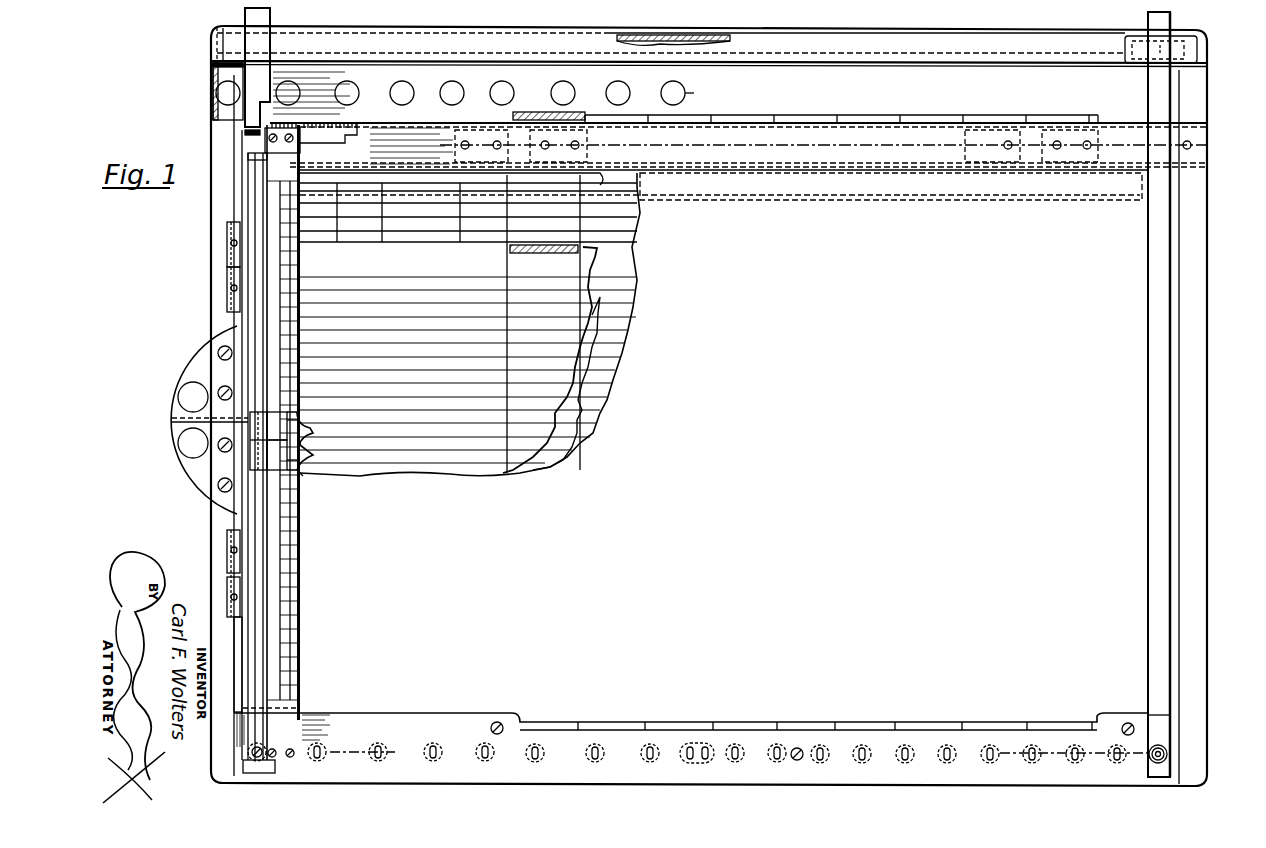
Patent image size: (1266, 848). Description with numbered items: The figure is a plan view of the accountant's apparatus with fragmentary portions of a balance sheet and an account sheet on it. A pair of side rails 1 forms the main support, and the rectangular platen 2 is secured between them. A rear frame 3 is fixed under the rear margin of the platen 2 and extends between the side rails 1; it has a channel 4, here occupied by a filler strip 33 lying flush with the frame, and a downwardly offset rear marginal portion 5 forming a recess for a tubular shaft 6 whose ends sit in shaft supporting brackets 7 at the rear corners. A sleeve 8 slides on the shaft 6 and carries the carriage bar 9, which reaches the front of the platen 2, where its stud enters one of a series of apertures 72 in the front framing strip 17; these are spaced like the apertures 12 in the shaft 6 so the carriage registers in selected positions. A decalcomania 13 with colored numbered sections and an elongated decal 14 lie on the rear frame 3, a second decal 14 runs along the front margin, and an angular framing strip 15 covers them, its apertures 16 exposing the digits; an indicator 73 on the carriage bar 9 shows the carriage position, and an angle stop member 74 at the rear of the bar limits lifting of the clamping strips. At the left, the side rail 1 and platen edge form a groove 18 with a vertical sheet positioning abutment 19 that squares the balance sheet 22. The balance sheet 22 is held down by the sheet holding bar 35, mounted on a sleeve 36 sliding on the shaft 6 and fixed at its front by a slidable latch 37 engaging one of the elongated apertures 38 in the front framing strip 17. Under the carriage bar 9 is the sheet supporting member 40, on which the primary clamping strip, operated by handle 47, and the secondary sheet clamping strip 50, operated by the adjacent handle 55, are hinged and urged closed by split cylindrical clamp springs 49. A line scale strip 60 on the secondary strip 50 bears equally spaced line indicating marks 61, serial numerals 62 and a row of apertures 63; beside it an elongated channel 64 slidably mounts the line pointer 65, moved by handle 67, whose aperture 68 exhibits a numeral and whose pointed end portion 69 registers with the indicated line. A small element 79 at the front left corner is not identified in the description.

The side rails 1 is at (211, 288).
The platen 2 is at (1132, 415).
The rear frame 3 is at (797, 28).
The channel 4 is at (198, 760).
The downwardly offset rear marginal portion 5 is at (1133, 759).
The tubular shaft 6 is at (900, 44).
The shaft supporting brackets 7 is at (211, 44).
The sleeve 8 is at (563, 42).
The carriage bar 9 is at (262, 18).
The apertures 12 is at (718, 40).
The decalcomania 13 is at (130, 130).
The decal 14 is at (883, 118).
The framing strip 15 is at (835, 98).
The apertures 16 is at (510, 87).
The front framing strip 17 is at (455, 725).
The groove 18 is at (237, 623).
The sheet positioning abutment 19 is at (234, 201).
The balance sheet 22 is at (620, 274).
The filler strip 33 is at (1133, 152).
The sheet holding bar 35 is at (1160, 397).
The sleeve 36 is at (1177, 51).
The slidable latch 37 is at (1167, 753).
The elongated apertures 38 is at (650, 745).
The sheet supporting member 40 is at (300, 491).
The handle 47 is at (205, 351).
The split cylindrical clamp springs 49 is at (228, 283).
The secondary sheet clamping strip 50 is at (290, 767).
The handle 55 is at (188, 463).
The line scale strip 60 is at (292, 691).
The line indicating marks 61 is at (290, 643).
The numerals 62 is at (290, 613).
The apertures 63 is at (285, 593).
The channel 64 is at (253, 666).
The line pointer 65 is at (302, 474).
The handle 67 is at (257, 441).
The aperture 68 is at (290, 428).
The pointed end portion 69 is at (292, 459).
The apertures 72 is at (433, 749).
The indicator 73 is at (218, 80).
The angle stop member 74 is at (248, 117).
The screw 79 is at (250, 758).